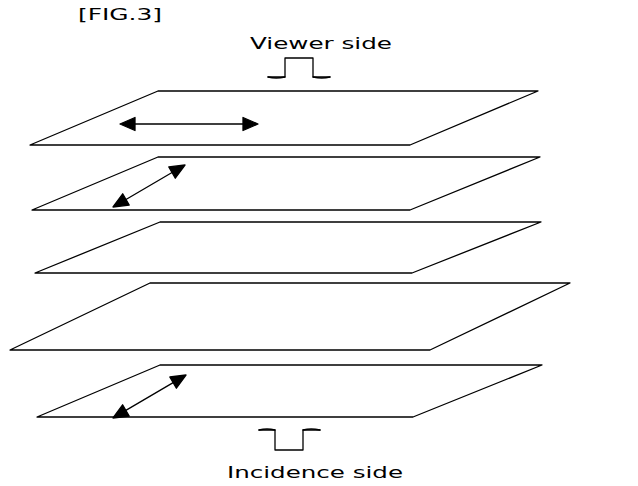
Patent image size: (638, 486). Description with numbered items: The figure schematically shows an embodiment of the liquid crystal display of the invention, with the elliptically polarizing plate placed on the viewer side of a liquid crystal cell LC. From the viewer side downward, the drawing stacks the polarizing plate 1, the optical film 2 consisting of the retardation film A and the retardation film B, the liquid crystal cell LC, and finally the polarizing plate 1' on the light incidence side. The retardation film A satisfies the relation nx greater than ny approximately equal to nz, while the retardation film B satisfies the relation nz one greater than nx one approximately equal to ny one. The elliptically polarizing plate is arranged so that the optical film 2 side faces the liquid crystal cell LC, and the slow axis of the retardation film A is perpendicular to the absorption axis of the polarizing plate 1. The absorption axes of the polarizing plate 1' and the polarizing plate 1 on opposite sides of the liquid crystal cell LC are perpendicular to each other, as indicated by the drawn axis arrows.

The polarizing plate 1 is at (287, 118).
The optical film 2 is at (309, 215).
The retardation film A is at (467, 182).
The retardation film B is at (292, 247).
The liquid crystal cell LC is at (457, 332).
The polarizing plate 1' is at (295, 391).